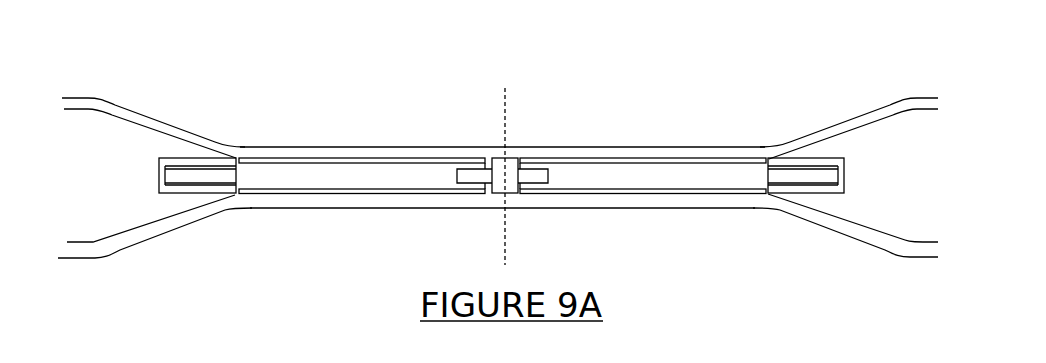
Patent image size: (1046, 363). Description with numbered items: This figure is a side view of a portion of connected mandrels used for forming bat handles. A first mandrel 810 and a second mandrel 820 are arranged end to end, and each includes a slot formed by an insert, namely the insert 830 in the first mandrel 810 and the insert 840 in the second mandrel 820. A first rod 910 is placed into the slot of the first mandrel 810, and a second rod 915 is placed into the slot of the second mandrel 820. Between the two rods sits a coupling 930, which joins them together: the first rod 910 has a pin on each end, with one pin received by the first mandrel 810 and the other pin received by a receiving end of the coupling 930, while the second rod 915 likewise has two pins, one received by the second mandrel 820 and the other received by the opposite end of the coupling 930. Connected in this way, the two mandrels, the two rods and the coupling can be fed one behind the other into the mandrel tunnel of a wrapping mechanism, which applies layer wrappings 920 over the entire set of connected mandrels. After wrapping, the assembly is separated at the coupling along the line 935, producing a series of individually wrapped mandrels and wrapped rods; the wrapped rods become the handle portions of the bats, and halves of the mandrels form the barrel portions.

The first mandrel 810 is at (92, 130).
The second mandrel 820 is at (895, 137).
The layer wrappings 920 is at (144, 112).
The insert 830 is at (183, 162).
The insert 840 is at (795, 163).
The first rod 910 is at (384, 170).
The second rod 915 is at (665, 175).
The coupling 930 is at (494, 164).
The line 935 is at (505, 93).